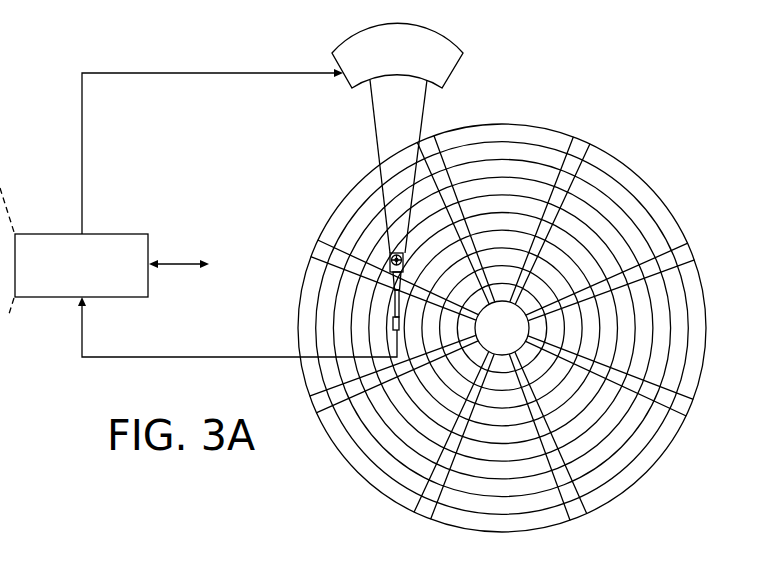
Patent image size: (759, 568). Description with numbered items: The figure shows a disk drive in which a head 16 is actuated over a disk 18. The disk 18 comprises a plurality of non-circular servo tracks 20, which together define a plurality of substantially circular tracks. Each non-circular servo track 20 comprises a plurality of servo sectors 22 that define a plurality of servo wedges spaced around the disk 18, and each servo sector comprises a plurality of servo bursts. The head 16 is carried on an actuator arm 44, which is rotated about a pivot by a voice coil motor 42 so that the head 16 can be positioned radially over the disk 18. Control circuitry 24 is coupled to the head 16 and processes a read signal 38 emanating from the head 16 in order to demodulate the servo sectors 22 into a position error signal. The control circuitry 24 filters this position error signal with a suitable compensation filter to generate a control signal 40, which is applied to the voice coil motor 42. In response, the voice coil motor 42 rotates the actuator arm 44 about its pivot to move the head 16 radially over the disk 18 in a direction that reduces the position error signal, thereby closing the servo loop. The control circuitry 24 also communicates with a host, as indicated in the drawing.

The head 16 is at (384, 333).
The disk 18 is at (643, 169).
The non-circular servo tracks 20 is at (500, 153).
The servo sectors 22 is at (582, 146).
The control circuitry 24 is at (115, 234).
The read signal 38 is at (205, 358).
The control signal 40 is at (82, 141).
The voice coil motor 42 is at (345, 80).
The actuator arm 44 is at (378, 153).